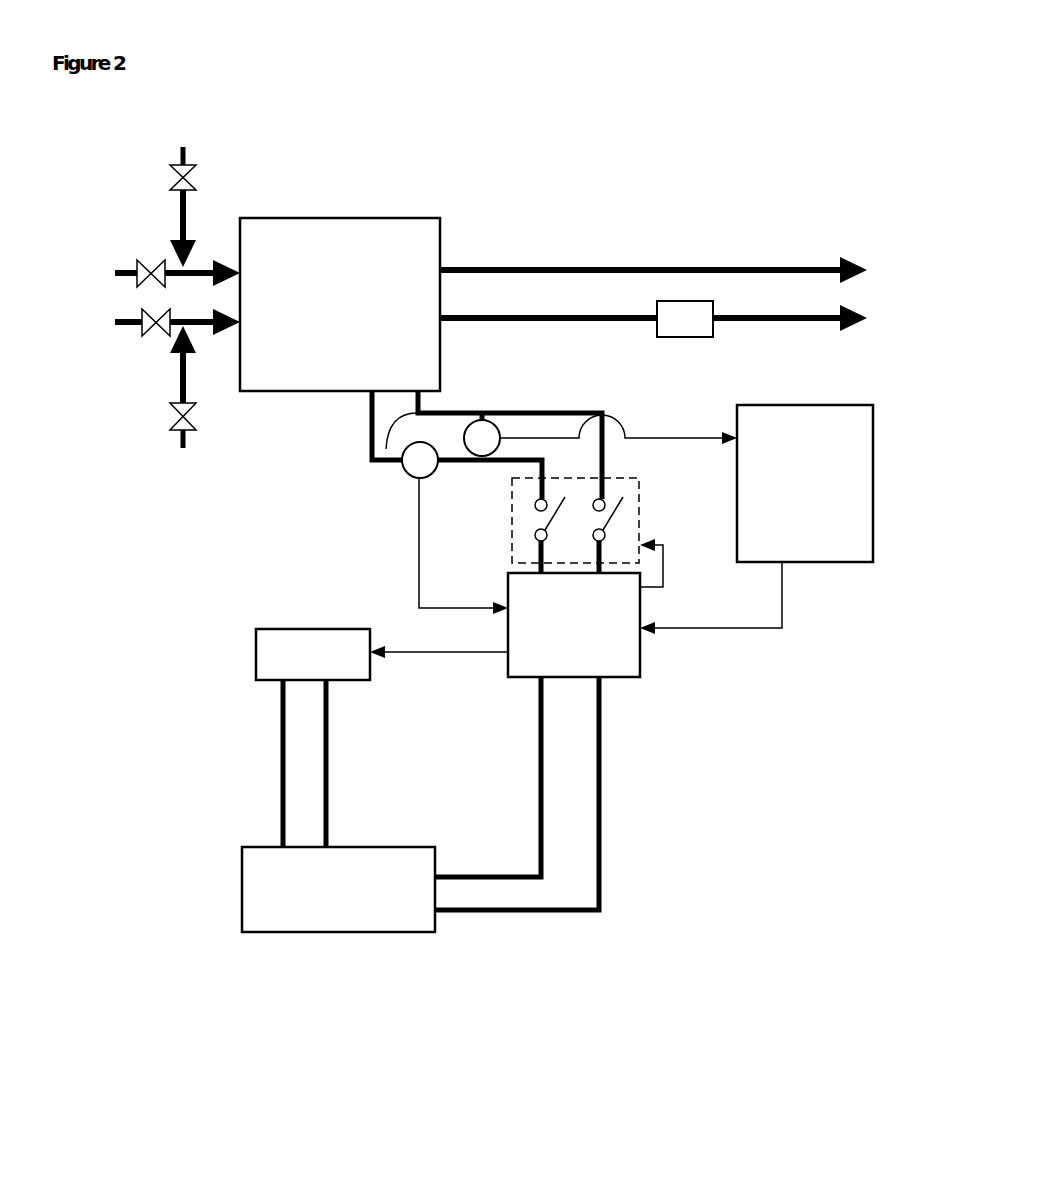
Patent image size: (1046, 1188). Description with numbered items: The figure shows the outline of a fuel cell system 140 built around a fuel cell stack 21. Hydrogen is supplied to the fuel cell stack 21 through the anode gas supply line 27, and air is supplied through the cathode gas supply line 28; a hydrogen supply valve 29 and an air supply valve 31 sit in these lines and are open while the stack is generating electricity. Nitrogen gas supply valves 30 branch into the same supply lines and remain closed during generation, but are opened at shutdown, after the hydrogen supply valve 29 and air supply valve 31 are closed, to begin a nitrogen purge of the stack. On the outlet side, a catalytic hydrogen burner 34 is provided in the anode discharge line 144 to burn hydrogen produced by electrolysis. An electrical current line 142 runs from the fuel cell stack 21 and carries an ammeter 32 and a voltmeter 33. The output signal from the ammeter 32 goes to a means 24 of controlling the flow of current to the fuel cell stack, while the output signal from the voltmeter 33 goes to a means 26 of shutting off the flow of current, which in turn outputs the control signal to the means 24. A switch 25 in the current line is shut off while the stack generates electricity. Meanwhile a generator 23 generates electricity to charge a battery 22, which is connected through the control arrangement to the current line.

The fuel cell stack 21 is at (318, 218).
The battery 22 is at (328, 940).
The generator 23 is at (218, 690).
The means of controlling the flow of current to the fuel cell stack 24 is at (628, 692).
The switch 25 is at (625, 468).
The means of shutting off the flow of current to the fuel cell stack 26 is at (835, 568).
The anode gas supply line 27 is at (122, 327).
The cathode gas supply line 28 is at (113, 263).
The hydrogen supply valve 29 is at (152, 337).
The nitrogen gas supply valve 30 is at (197, 178).
The air supply valve 31 is at (147, 259).
The ammeter 32 is at (428, 442).
The voltmeter 33 is at (492, 415).
The catalytic hydrogen burner 34 is at (690, 298).
The fuel cell system 140 is at (832, 182).
The electrical current line 142 is at (384, 462).
The anode discharge line 144 is at (807, 328).